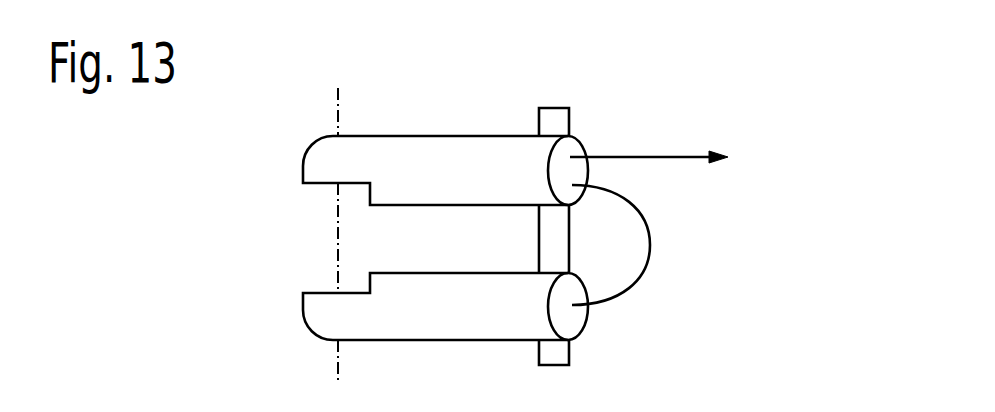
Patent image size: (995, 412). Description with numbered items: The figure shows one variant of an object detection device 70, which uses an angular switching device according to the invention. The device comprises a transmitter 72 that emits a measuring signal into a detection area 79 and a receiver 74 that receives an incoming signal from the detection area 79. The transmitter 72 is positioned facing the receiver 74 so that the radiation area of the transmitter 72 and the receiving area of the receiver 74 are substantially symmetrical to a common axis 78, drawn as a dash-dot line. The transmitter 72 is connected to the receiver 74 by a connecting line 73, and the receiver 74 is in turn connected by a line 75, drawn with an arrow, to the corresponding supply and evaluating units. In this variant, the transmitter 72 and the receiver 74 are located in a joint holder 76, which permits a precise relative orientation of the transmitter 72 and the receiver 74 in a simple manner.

The object detection device 70 is at (268, 209).
The transmitter 72 is at (462, 322).
The connecting line 73 is at (650, 255).
The receiver 74 is at (472, 187).
The line 75 is at (655, 157).
The joint holder 76 is at (553, 120).
The common axis 78 is at (338, 108).
The detection area 79 is at (323, 245).